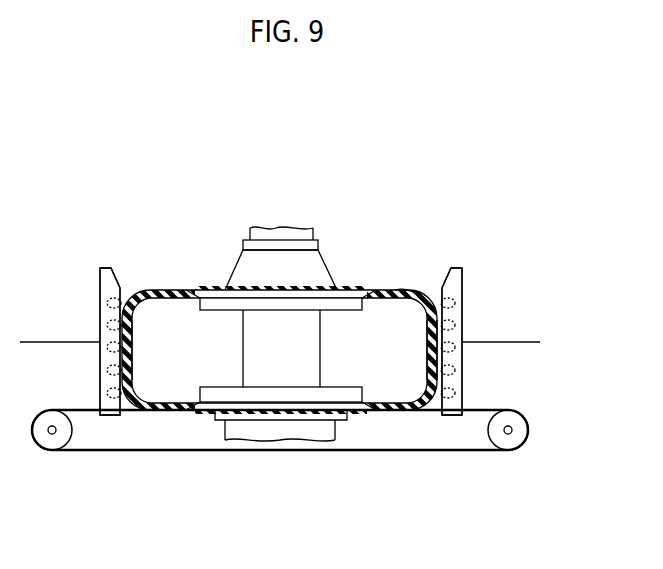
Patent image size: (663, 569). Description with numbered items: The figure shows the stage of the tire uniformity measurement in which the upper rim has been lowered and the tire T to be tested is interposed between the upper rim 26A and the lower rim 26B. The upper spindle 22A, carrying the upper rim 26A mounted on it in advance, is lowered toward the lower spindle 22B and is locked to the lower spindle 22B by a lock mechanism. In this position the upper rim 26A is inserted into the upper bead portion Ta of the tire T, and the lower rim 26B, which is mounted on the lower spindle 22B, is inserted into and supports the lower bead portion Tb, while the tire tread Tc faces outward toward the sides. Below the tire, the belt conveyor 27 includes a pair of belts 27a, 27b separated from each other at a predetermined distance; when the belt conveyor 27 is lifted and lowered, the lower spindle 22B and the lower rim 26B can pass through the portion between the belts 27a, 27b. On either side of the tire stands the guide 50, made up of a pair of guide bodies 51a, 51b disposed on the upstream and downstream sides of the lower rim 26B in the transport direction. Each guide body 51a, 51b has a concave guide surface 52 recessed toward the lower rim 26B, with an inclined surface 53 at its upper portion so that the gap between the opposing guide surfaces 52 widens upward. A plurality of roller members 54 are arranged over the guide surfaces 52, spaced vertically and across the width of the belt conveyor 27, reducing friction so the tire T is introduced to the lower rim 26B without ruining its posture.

The tire to be tested T is at (399, 290).
The upper bead portion Ta is at (353, 297).
The lower bead portion Tb is at (345, 300).
The tire tread Tc is at (462, 318).
The upper spindle 22A is at (276, 265).
The lower spindle 22B is at (276, 430).
The upper rim 26A is at (213, 300).
The lower rim 26B is at (208, 400).
The belt conveyor 27 is at (280, 473).
The belt 27a is at (98, 452).
The belt 27b is at (472, 505).
The guide 50 is at (288, 289).
The guide body 51a is at (467, 277).
The guide body 51b is at (96, 276).
The guide surface 52 is at (128, 292).
The inclined surface 53 is at (118, 286).
The roller member 54 is at (128, 347).